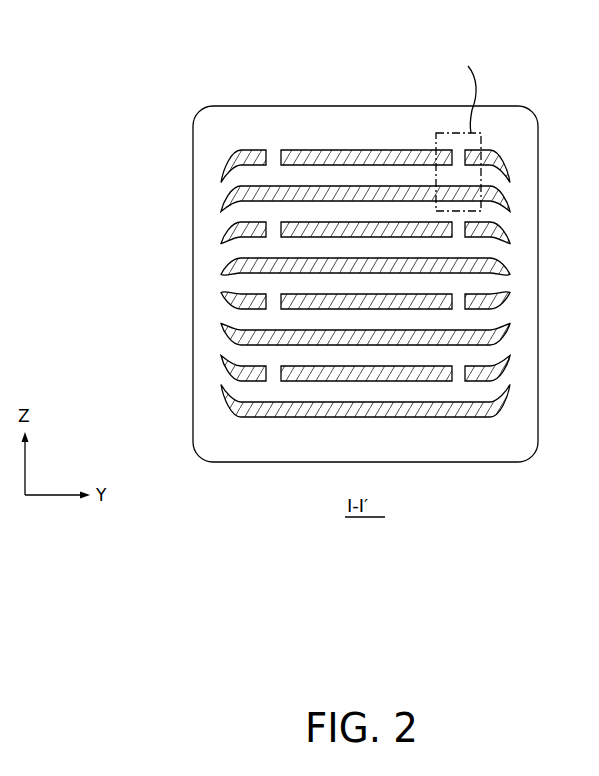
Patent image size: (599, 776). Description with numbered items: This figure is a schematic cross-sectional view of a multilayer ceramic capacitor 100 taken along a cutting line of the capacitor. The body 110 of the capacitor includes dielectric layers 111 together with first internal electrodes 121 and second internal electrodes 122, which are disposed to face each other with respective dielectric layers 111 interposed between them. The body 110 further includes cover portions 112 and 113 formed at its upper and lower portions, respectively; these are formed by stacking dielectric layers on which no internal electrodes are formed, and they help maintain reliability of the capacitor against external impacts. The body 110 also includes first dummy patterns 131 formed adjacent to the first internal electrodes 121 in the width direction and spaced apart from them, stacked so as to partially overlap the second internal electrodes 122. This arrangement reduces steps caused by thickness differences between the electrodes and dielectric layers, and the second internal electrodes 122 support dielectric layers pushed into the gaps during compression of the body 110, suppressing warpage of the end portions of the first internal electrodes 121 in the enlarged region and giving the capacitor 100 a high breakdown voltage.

The multilayer ceramic capacitor 100 is at (272, 35).
The body 110 is at (385, 94).
The dielectric layers 111 is at (233, 180).
The cover portion 112 is at (238, 118).
The cover portion 113 is at (253, 450).
The first internal electrodes 121 is at (295, 151).
The second internal electrodes 122 is at (233, 208).
The first dummy patterns 131 is at (240, 165).